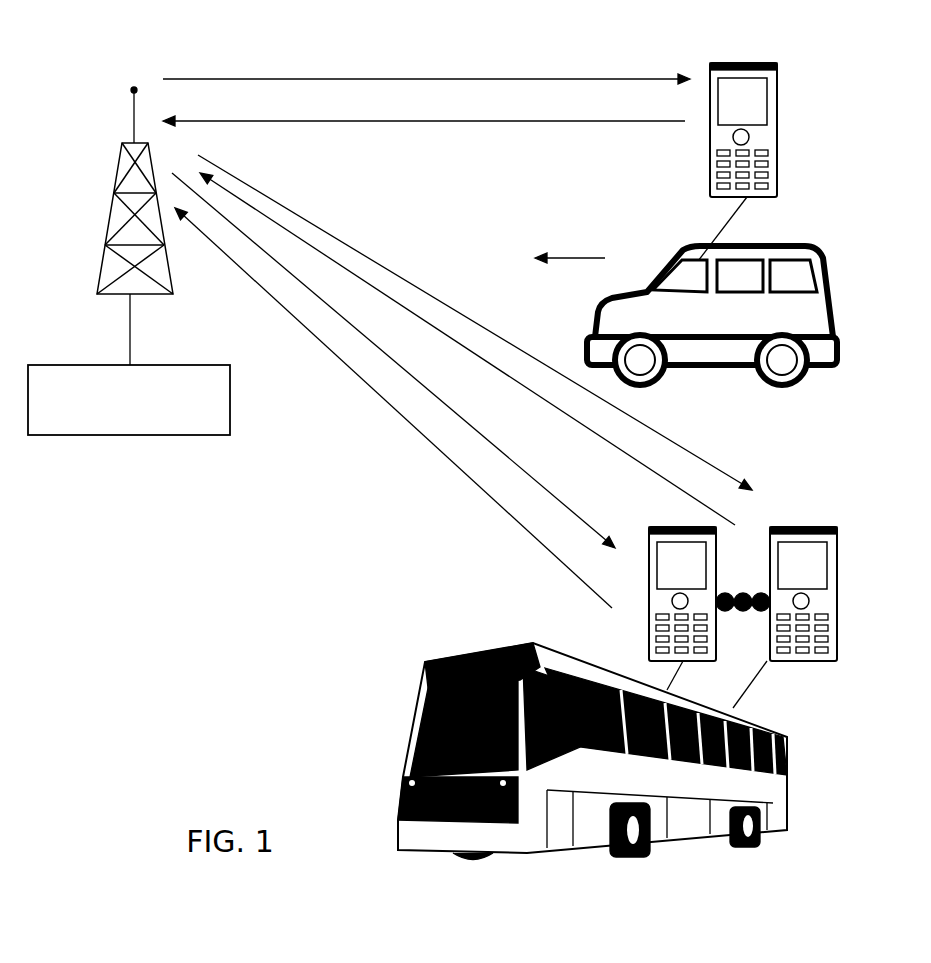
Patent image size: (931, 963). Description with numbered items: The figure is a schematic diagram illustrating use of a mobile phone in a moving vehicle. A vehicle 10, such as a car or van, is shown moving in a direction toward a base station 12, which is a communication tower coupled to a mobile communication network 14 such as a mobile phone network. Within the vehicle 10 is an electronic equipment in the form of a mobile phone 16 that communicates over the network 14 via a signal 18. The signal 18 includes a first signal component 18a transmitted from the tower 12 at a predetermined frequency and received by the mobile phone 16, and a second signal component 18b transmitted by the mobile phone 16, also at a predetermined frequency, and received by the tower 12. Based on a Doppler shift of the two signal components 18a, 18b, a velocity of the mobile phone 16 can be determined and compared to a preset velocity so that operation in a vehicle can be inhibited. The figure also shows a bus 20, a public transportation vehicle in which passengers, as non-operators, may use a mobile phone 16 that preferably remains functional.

The vehicle 10 is at (778, 247).
The base station 12 is at (105, 240).
The mobile communication network 14 is at (230, 388).
The mobile phone 16 is at (710, 137).
The signal 18 is at (236, 58).
The first signal component 18a is at (355, 79).
The second signal component 18b is at (408, 121).
The bus 20 is at (490, 645).